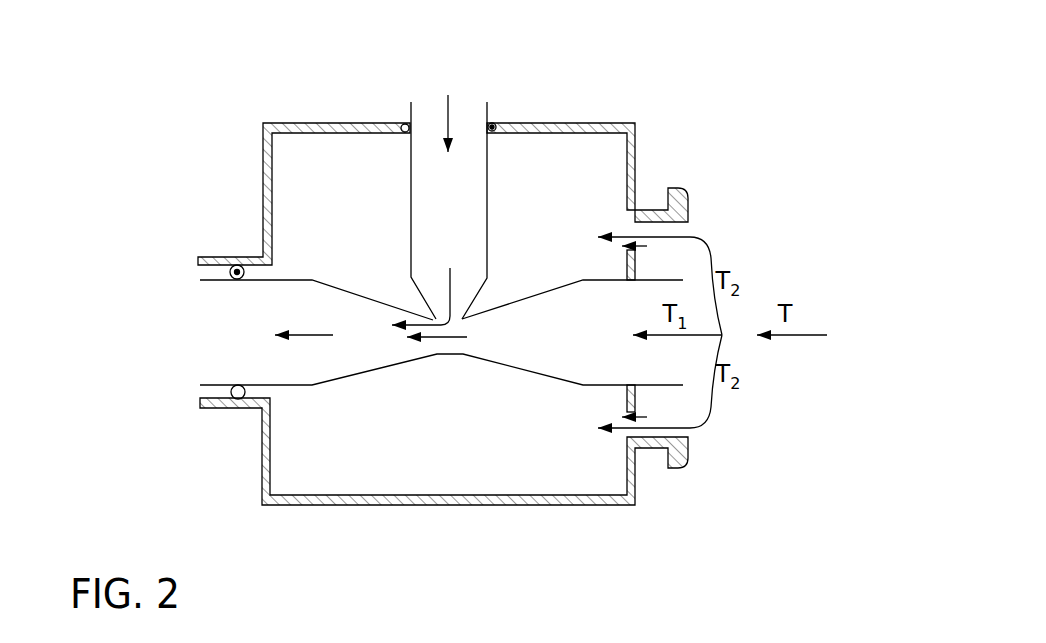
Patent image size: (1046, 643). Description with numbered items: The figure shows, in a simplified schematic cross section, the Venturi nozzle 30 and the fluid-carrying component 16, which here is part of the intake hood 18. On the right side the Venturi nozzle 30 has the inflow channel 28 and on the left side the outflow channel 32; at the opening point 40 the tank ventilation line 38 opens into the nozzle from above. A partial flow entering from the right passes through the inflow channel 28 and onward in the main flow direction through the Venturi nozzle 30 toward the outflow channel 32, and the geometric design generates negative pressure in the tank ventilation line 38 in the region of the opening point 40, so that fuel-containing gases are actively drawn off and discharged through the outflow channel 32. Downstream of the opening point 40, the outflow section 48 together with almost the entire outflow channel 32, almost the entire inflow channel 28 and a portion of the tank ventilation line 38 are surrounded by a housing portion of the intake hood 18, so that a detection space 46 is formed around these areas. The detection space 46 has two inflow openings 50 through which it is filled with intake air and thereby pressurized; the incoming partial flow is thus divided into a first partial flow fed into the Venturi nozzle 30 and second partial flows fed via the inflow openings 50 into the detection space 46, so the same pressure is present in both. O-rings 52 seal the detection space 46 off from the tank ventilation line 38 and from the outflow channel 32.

The fluid-carrying component 16 is at (443, 271).
The intake hood 18 is at (605, 127).
The inflow channel 28 is at (562, 362).
The Venturi nozzle 30 is at (345, 385).
The outflow channel 32 is at (220, 340).
The tank ventilation line 38 is at (463, 180).
The opening point 40 is at (402, 296).
The detection space 46 is at (421, 448).
The outflow section 48 is at (306, 287).
The inflow openings 50 is at (648, 246).
The O-rings 52 is at (235, 266).